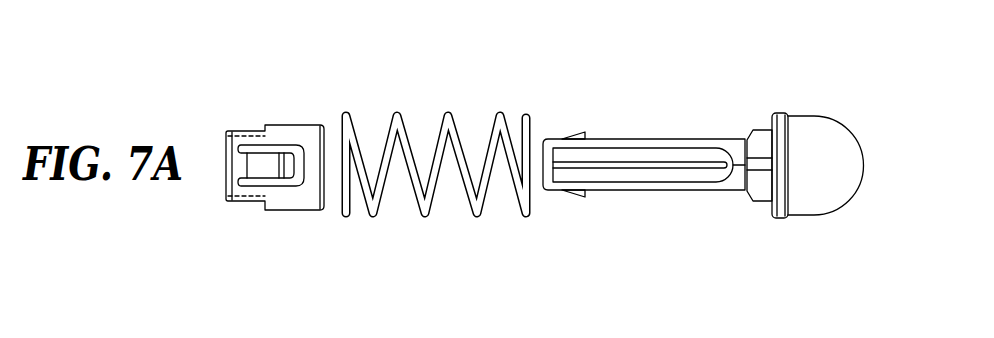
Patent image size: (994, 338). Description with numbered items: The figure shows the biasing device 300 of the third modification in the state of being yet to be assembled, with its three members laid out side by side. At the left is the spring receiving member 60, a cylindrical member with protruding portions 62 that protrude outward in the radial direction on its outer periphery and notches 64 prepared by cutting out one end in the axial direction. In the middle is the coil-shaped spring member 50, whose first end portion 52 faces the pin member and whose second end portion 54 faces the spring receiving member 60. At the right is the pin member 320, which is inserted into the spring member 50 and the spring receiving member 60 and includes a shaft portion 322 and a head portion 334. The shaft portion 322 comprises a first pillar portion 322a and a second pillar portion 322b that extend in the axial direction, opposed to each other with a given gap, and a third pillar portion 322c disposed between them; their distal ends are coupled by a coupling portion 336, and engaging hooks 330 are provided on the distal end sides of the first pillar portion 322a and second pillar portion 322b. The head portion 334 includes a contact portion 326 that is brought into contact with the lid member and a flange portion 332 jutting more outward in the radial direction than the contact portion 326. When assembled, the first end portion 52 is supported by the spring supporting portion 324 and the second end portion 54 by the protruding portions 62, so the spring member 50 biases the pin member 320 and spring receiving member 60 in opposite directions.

The spring member 50 is at (436, 122).
The first end portion 52 is at (522, 116).
The second end portion 54 is at (345, 212).
The spring receiving member 60 is at (283, 126).
The protruding portions 62 is at (275, 168).
The notches 64 is at (257, 133).
The biasing device 300 is at (533, 293).
The pin member 320 is at (722, 133).
The shaft portion 322 is at (648, 184).
The first pillar portion 322a is at (682, 146).
The second pillar portion 322b is at (687, 190).
The third pillar portion 322c is at (628, 160).
The spring supporting portion 324 is at (765, 133).
The contact portion 326 is at (833, 198).
The engaging hooks 330 is at (571, 131).
The flange portion 332 is at (780, 218).
The head portion 334 is at (886, 266).
The coupling portion 336 is at (537, 182).